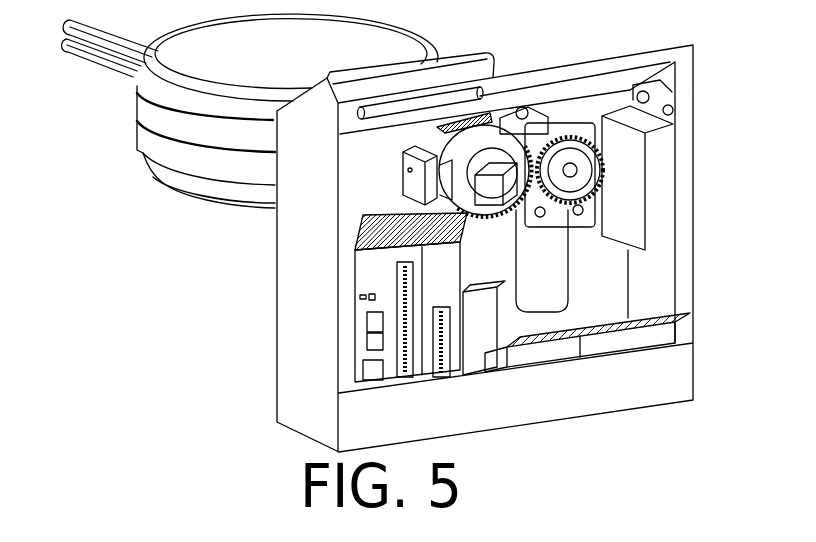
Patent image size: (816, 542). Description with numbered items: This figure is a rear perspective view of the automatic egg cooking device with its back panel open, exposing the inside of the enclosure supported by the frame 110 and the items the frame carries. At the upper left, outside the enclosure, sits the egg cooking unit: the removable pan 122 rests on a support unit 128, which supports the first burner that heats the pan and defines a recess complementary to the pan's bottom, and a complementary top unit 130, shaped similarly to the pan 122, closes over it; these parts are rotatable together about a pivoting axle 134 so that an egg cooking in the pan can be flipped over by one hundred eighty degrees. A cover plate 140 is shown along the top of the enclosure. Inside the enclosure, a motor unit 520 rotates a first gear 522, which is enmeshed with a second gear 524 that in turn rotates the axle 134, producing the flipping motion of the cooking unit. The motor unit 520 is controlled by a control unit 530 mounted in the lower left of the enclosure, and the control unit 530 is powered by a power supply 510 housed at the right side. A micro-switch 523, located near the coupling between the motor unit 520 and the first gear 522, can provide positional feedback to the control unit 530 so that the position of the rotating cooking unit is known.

The frame 110 is at (273, 324).
The removable pan 122 is at (141, 103).
The support unit 128 is at (193, 190).
The top unit 130 is at (285, 65).
The pivoting axle 134 is at (570, 177).
The lid / top cover plate 140 is at (460, 54).
The power supply 510 is at (658, 203).
The motor unit 520 is at (427, 146).
The first gear 522 is at (503, 213).
The micro-switch 523 is at (443, 203).
The second gear 524 is at (553, 143).
The control unit 530 is at (370, 276).